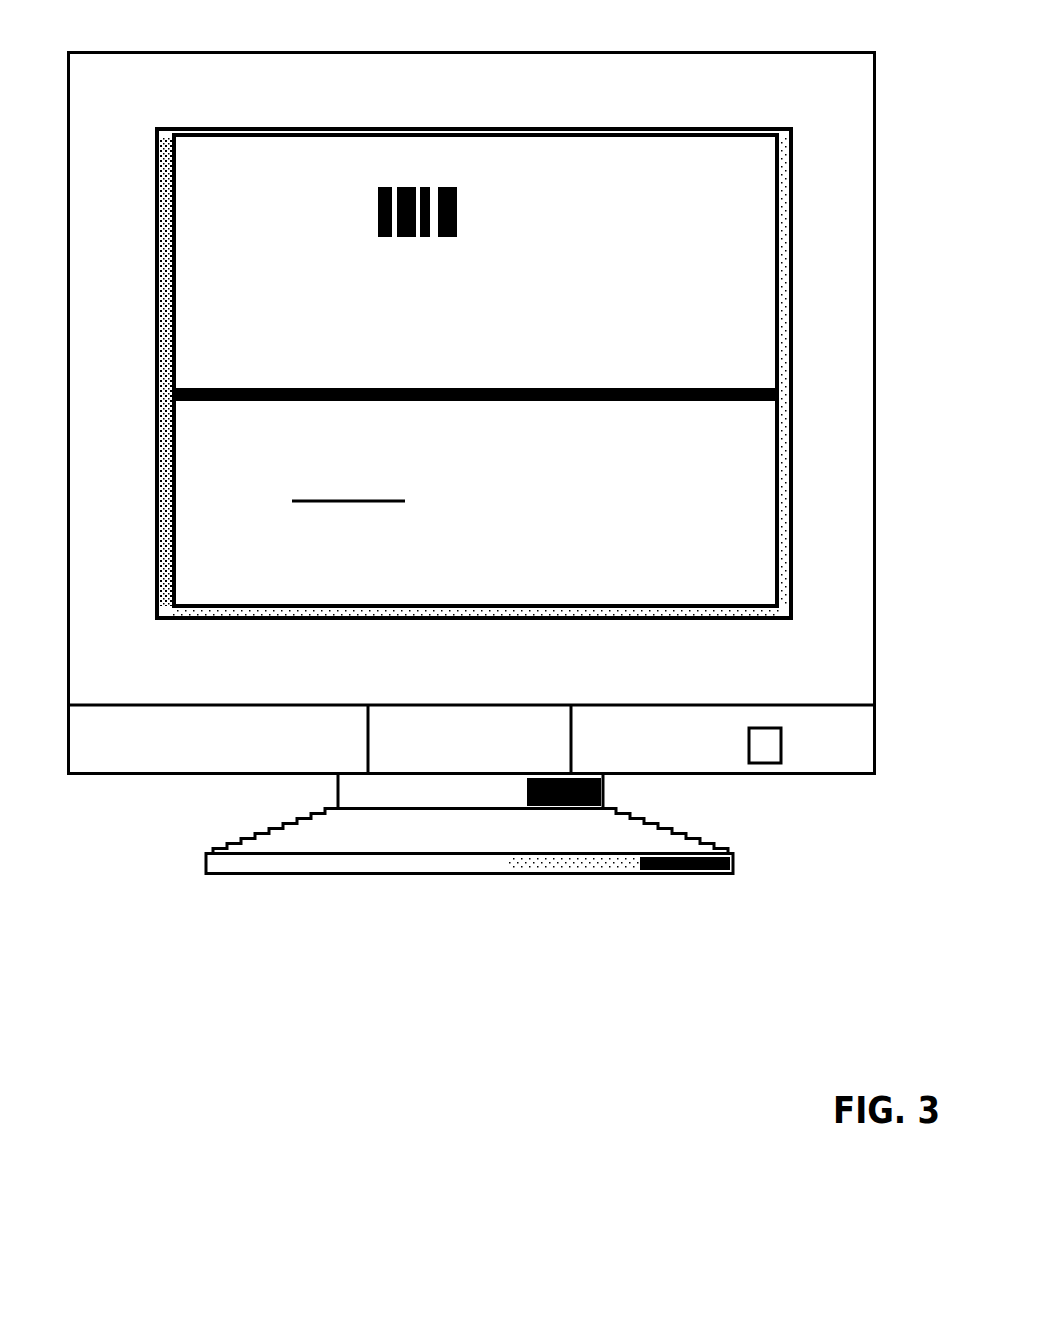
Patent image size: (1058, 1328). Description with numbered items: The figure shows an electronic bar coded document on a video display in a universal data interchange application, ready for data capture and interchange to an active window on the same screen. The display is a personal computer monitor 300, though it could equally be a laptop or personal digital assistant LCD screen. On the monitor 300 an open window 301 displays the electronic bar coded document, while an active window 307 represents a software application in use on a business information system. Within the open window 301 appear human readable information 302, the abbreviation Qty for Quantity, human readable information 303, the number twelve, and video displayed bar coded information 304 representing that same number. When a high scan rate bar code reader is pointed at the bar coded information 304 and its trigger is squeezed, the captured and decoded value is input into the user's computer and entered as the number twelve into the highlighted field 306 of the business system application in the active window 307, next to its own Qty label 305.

The personal computer monitor 300 is at (338, 79).
The open window 301 is at (563, 297).
The human readable information 302 is at (251, 238).
The human readable information 303 is at (323, 238).
The video displayed bar coded information 304 is at (407, 238).
The quantity label (Qty) in second display 305 is at (234, 503).
The highlighted field 306 is at (335, 503).
The active window 307 is at (562, 510).